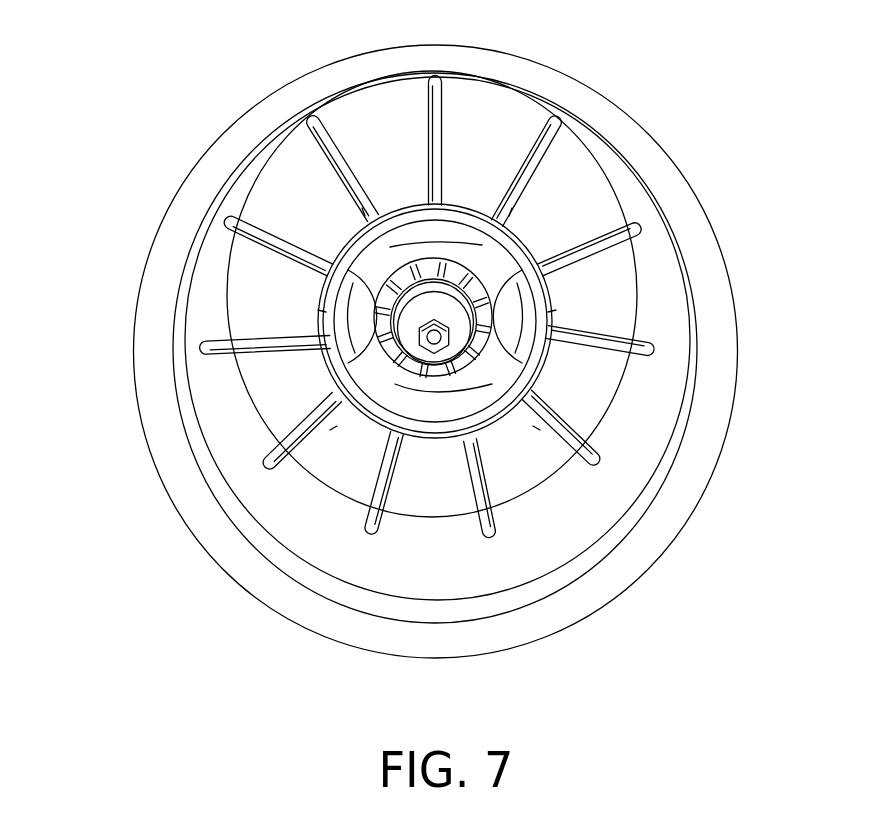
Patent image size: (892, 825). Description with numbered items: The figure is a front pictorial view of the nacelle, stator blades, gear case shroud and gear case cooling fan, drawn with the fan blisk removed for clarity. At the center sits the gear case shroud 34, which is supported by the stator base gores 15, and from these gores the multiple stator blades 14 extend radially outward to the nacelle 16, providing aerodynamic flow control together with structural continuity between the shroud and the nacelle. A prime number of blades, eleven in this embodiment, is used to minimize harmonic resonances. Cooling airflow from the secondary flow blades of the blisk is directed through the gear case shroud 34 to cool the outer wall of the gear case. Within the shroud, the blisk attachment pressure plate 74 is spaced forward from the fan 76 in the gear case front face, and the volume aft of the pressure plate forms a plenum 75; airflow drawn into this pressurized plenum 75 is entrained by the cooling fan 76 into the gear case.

The stator blades 14 is at (442, 153).
The stator base gores 15 is at (411, 206).
The nacelle 16 is at (663, 533).
The gear case shroud 34 is at (398, 422).
The blisk attachment pressure plate 74 is at (410, 287).
The plenum 75 is at (365, 370).
The gear case cooling fan 76 is at (460, 278).